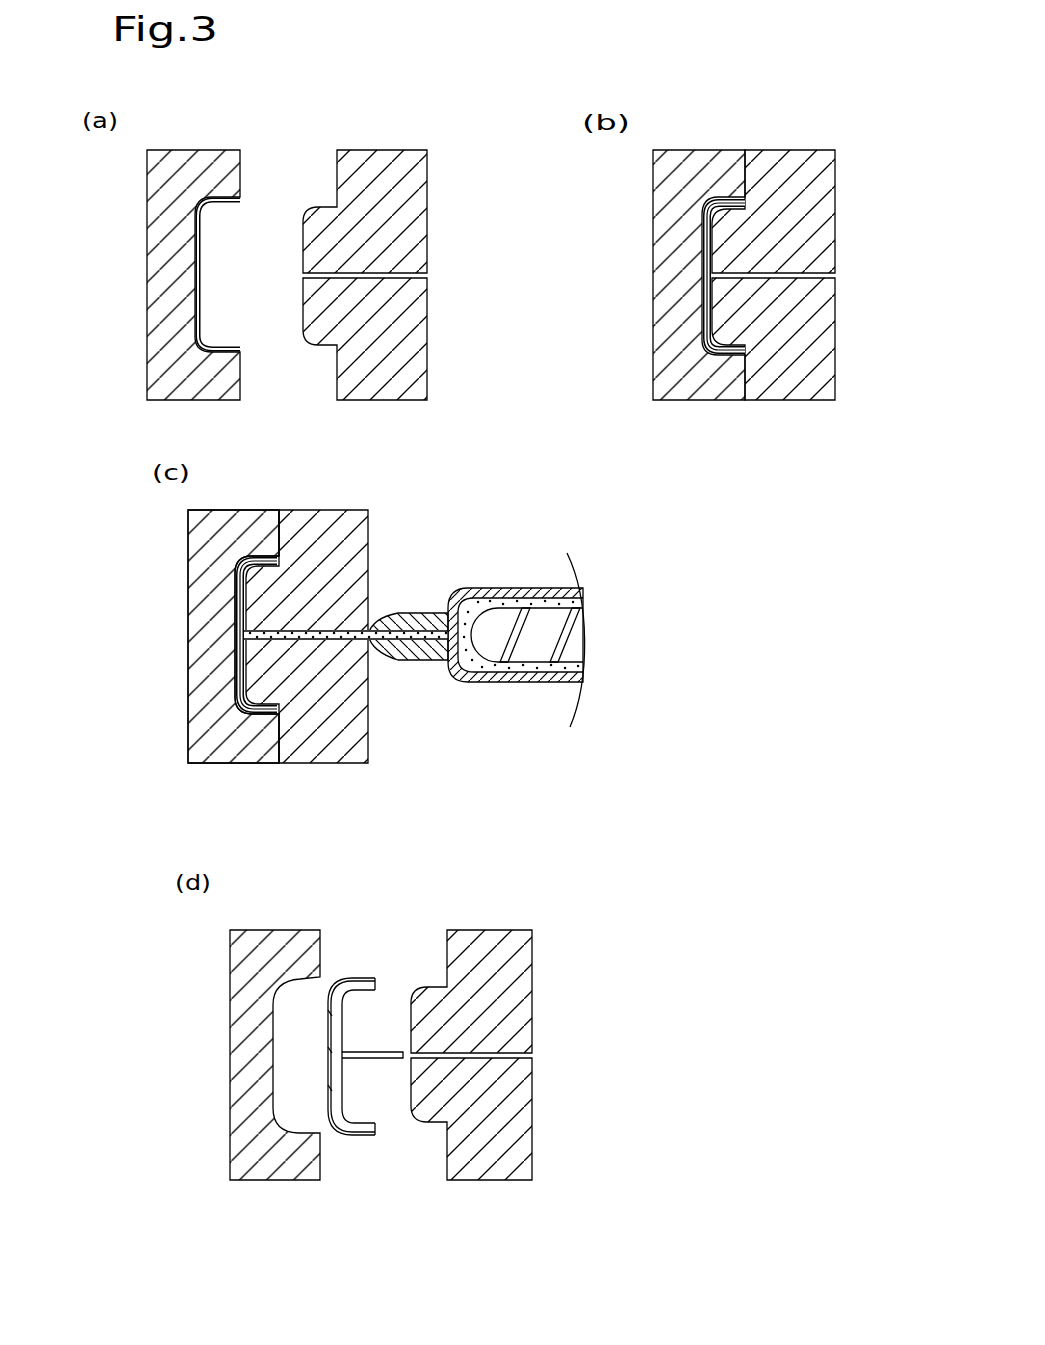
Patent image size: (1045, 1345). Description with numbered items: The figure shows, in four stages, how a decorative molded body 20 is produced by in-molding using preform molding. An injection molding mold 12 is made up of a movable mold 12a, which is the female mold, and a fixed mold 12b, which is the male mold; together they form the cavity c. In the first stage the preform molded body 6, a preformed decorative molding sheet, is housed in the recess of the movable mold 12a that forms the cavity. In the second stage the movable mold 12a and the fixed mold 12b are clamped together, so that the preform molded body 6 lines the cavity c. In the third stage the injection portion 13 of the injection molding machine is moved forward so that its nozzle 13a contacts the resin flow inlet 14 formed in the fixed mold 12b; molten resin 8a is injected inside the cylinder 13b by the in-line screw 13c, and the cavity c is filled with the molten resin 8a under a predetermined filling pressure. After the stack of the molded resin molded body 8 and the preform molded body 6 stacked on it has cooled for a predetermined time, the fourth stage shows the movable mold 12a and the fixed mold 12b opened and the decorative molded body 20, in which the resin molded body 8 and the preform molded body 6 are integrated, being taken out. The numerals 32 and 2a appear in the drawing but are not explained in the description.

The injection molding mold 12 is at (488, 695).
The movable mold 12a is at (155, 264).
The fixed mold 12b is at (423, 197).
The mold 32 is at (233, 636).
The preform molded body 6 is at (203, 227).
The cavity c is at (278, 556).
The resin molded body 8 is at (378, 1046).
The molten resin 8a is at (370, 600).
The injection portion 13 is at (501, 608).
The nozzle 13a is at (404, 655).
The cylinder 13b is at (476, 678).
The in-line screw 13c is at (565, 652).
The resin flow inlet 14 is at (373, 628).
The molten resin 2a is at (495, 590).
The decorative molded body 20 is at (385, 1142).